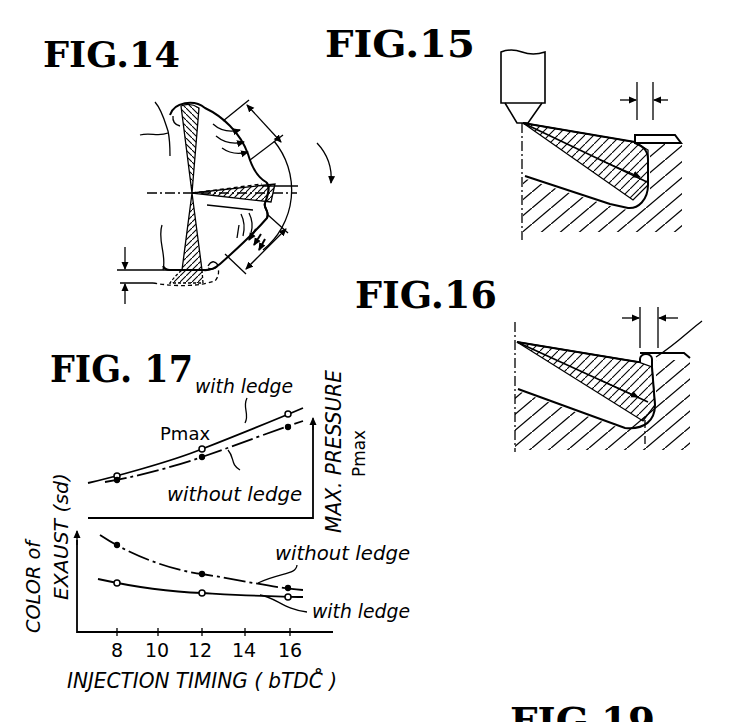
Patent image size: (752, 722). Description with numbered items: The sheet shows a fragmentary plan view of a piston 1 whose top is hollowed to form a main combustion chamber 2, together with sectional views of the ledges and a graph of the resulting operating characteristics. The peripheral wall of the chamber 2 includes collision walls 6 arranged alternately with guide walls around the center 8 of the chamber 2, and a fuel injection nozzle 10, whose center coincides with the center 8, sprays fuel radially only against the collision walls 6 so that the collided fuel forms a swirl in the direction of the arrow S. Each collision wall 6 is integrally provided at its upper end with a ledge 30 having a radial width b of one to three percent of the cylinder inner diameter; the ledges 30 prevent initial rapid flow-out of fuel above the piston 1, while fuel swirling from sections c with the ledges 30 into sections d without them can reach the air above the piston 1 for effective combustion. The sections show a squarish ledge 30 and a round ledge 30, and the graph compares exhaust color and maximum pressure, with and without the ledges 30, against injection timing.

In FIG. 14, the piston 1 is at (220, 84).
In FIG. 15, the piston 1 is at (675, 136).
In FIG. 16, the piston 1 is at (688, 354).
In FIG. 14, the main combustion chamber 2 is at (167, 177).
In FIG. 15, the main combustion chamber 2 is at (563, 165).
In FIG. 16, the main combustion chamber 2 is at (555, 378).
In FIG. 14, the collision wall 6 is at (277, 185).
In FIG. 14, the center of the chamber 8 is at (183, 202).
In FIG. 15, the fuel injection nozzle 10 is at (512, 77).
In FIG. 14, the ledge 30 is at (268, 215).
In FIG. 15, the ledge 30 is at (635, 137).
In FIG. 16, the ledge 30 is at (639, 354).